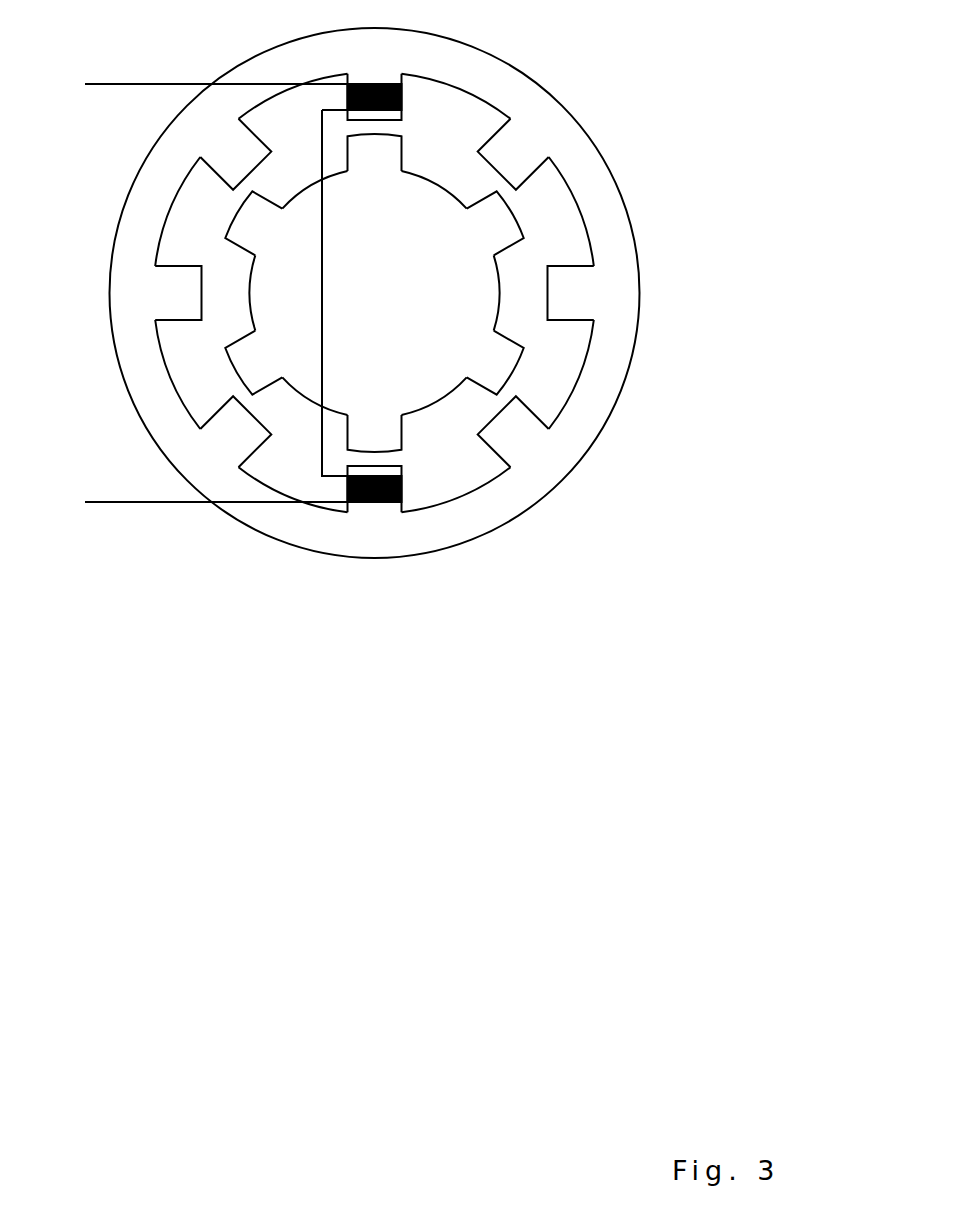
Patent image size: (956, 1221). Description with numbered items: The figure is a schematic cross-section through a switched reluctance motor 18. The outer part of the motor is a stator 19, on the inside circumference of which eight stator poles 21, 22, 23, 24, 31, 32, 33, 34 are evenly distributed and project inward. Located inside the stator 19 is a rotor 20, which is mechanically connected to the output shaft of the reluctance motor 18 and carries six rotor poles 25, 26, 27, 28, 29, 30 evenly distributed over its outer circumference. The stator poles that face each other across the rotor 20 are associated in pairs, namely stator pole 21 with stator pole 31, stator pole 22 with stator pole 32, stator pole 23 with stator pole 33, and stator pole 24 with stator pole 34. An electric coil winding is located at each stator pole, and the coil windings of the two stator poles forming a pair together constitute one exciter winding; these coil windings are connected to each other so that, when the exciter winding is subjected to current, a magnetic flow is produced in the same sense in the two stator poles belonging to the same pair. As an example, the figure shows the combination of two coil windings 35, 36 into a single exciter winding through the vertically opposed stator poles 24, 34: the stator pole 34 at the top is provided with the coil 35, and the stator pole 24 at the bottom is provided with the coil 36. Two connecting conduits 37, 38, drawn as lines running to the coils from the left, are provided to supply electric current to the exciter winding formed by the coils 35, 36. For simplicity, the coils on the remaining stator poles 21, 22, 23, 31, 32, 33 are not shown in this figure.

The switched reluctance motor 18 is at (395, 295).
The stator 19 is at (624, 337).
The rotor 20 is at (375, 293).
The stator pole 21 is at (517, 154).
The stator pole 22 is at (583, 293).
The stator pole 23 is at (516, 432).
The stator pole 24 is at (375, 505).
The rotor pole 25 is at (375, 154).
The rotor pole 26 is at (495, 223).
The rotor pole 27 is at (495, 363).
The rotor pole 28 is at (375, 432).
The rotor pole 29 is at (253, 363).
The rotor pole 30 is at (253, 223).
The stator pole 31 is at (233, 433).
The stator pole 32 is at (166, 293).
The stator pole 33 is at (231, 153).
The stator pole 34 is at (375, 79).
The coil winding 35 is at (404, 100).
The coil winding 36 is at (404, 486).
The connecting conduit 37 is at (110, 83).
The connecting conduit 38 is at (102, 504).